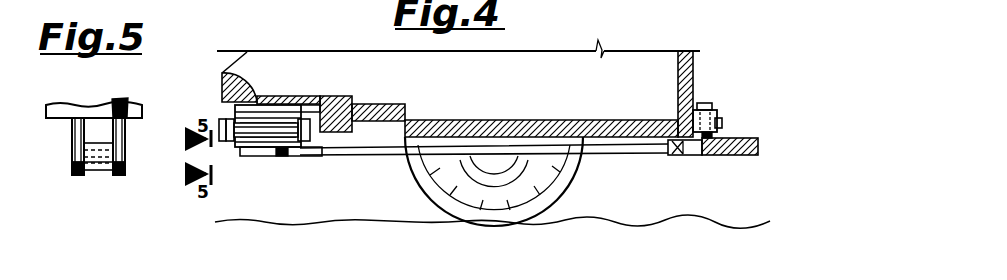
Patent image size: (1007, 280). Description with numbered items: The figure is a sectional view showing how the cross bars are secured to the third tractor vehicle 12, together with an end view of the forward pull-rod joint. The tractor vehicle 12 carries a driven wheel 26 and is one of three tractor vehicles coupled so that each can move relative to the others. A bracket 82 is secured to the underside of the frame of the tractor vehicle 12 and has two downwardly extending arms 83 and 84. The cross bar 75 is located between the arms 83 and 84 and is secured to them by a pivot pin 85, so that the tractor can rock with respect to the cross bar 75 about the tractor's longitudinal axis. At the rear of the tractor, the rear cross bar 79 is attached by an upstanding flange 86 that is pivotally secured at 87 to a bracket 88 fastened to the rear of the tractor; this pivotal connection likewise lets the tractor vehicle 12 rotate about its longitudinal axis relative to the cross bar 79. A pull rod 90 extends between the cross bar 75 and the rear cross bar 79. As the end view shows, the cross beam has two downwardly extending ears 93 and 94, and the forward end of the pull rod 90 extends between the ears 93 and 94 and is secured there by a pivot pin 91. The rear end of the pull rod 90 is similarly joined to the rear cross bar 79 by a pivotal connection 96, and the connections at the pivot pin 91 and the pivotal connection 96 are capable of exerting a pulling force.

In FIG. 4, the third tractor vehicle 12 is at (656, 36).
In FIG. 4, the wheel 26 is at (577, 175).
In FIG. 5, the cross bar 75 is at (136, 120).
In FIG. 4, the cross bar 75 is at (234, 147).
In FIG. 4, the rear cross bar 79 is at (735, 156).
In FIG. 4, the bracket 82 is at (222, 73).
In FIG. 4, the downwardly extending arm 83 is at (232, 117).
In FIG. 4, the downwardly extending arm 84 is at (326, 106).
In FIG. 4, the pivot pin 85 is at (272, 100).
In FIG. 4, the upstanding flange 86 is at (706, 104).
In FIG. 4, the pivot 87 is at (722, 122).
In FIG. 4, the bracket 88 is at (716, 115).
In FIG. 5, the pull rod 90 is at (100, 172).
In FIG. 4, the pull rod 90 is at (355, 156).
In FIG. 5, the pivot pin 91 is at (72, 160).
In FIG. 4, the pivot pin 91 is at (283, 153).
In FIG. 5, the downwardly extending ear 93 is at (72, 140).
In FIG. 5, the downwardly extending ear 94 is at (128, 145).
In FIG. 4, the downwardly extending ear 94 is at (248, 150).
In FIG. 4, the pivotal connection 96 is at (680, 155).